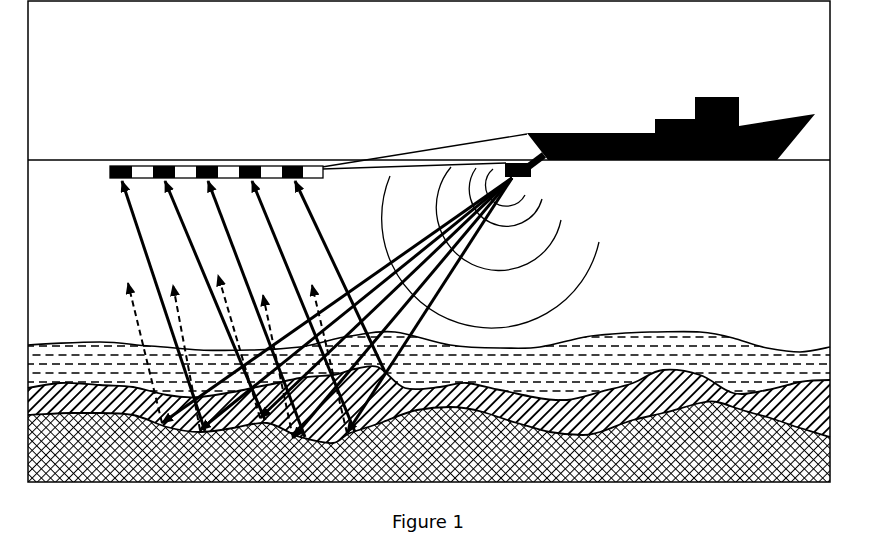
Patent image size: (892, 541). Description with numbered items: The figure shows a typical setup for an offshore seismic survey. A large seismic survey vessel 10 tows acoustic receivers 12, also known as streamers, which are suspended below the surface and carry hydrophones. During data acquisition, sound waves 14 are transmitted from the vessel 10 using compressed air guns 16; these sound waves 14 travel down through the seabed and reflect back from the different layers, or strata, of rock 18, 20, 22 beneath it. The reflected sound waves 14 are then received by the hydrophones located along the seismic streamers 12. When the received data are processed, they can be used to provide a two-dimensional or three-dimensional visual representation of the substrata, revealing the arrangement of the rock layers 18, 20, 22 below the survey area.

The seismic survey vessel 10 is at (740, 126).
The acoustic receivers 12 is at (162, 166).
The sound waves 14 is at (563, 217).
The compressed air guns 16 is at (505, 163).
The layer of rock 18 is at (635, 345).
The layer of rock 20 is at (677, 377).
The layer of rock 22 is at (717, 423).